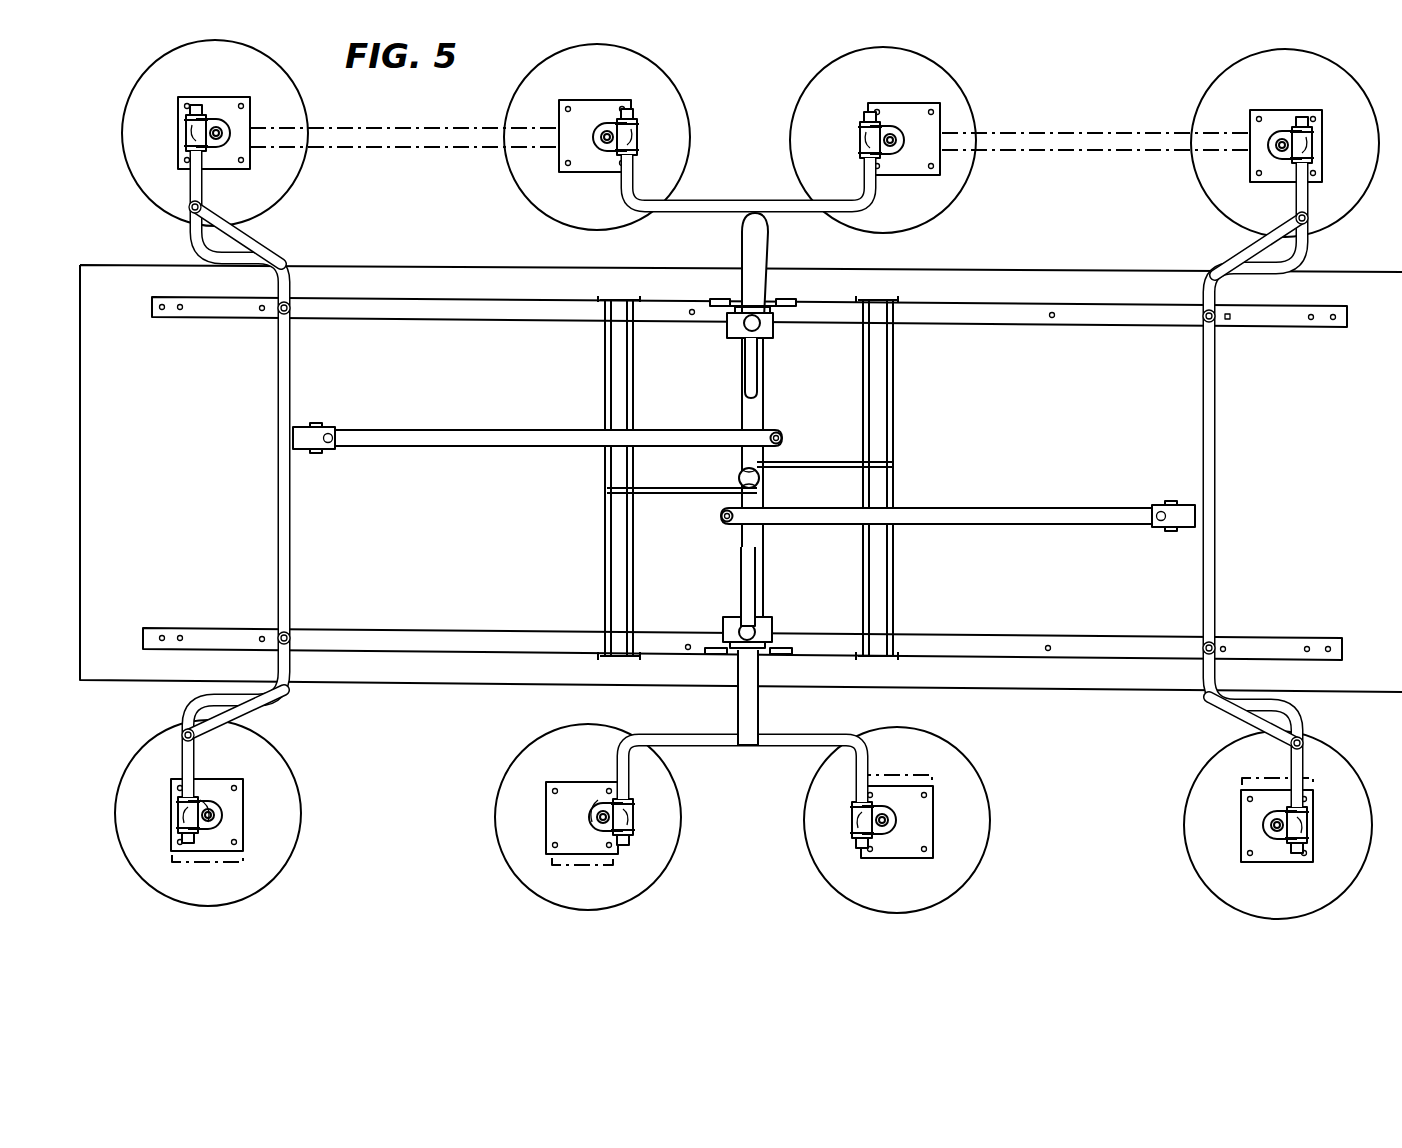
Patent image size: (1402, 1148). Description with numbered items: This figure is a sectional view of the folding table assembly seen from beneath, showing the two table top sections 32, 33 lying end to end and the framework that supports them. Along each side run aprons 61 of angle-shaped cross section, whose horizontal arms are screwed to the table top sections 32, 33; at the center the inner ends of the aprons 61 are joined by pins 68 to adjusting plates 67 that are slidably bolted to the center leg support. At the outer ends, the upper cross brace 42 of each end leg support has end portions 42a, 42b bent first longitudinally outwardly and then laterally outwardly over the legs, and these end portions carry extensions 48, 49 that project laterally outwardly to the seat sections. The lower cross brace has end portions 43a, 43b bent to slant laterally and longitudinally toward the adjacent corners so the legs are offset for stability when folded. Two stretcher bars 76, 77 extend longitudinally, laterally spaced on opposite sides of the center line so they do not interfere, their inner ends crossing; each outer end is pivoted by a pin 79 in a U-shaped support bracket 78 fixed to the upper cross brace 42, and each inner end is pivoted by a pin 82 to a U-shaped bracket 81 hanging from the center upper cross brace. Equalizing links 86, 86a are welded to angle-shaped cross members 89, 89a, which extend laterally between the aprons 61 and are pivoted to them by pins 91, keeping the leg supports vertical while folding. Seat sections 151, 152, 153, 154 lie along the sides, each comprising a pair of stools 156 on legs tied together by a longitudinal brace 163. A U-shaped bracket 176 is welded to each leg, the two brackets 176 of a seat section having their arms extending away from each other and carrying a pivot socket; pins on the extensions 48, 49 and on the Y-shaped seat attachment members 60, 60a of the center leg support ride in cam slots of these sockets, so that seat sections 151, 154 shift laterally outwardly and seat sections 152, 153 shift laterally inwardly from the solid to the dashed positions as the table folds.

The table top section 32 is at (152, 524).
The table top section 33 is at (1339, 502).
The upper cross brace 42 is at (280, 378).
The end portion of upper cross brace 42a is at (222, 689).
The end portion of upper cross brace 42b is at (238, 252).
The end portion of lower cross brace 43a is at (255, 712).
The end portion of lower cross brace 43b is at (262, 240).
The extension 48 is at (193, 185).
The extension 49 is at (188, 768).
The yoke or Y-shaped seat attachment member 60 is at (747, 230).
The yoke or Y-shaped seat attachment member 60a is at (735, 710).
The apron 61 is at (412, 320).
The adjusting plate 67 is at (774, 327).
The pin 68 is at (716, 300).
The stretcher bar 76 is at (468, 430).
The stretcher bar 77 is at (990, 508).
The U-shaped support bracket 78 is at (307, 427).
The pin 79 is at (330, 448).
The U-shaped bracket 81 is at (738, 490).
The pin 82 is at (770, 432).
The link 86 is at (655, 492).
The link 86a is at (830, 468).
The angle-shaped cross member 89 is at (607, 372).
The angle-shaped cross member 89a is at (893, 382).
The pin 91 is at (617, 300).
The seat section 151 is at (148, 733).
The seat section 152 is at (1340, 742).
The seat section 153 is at (140, 72).
The seat section 154 is at (1365, 83).
The stool 156 is at (302, 168).
The longitudinally extending brace 163 is at (410, 126).
The U-shaped bracket 176 is at (205, 805).